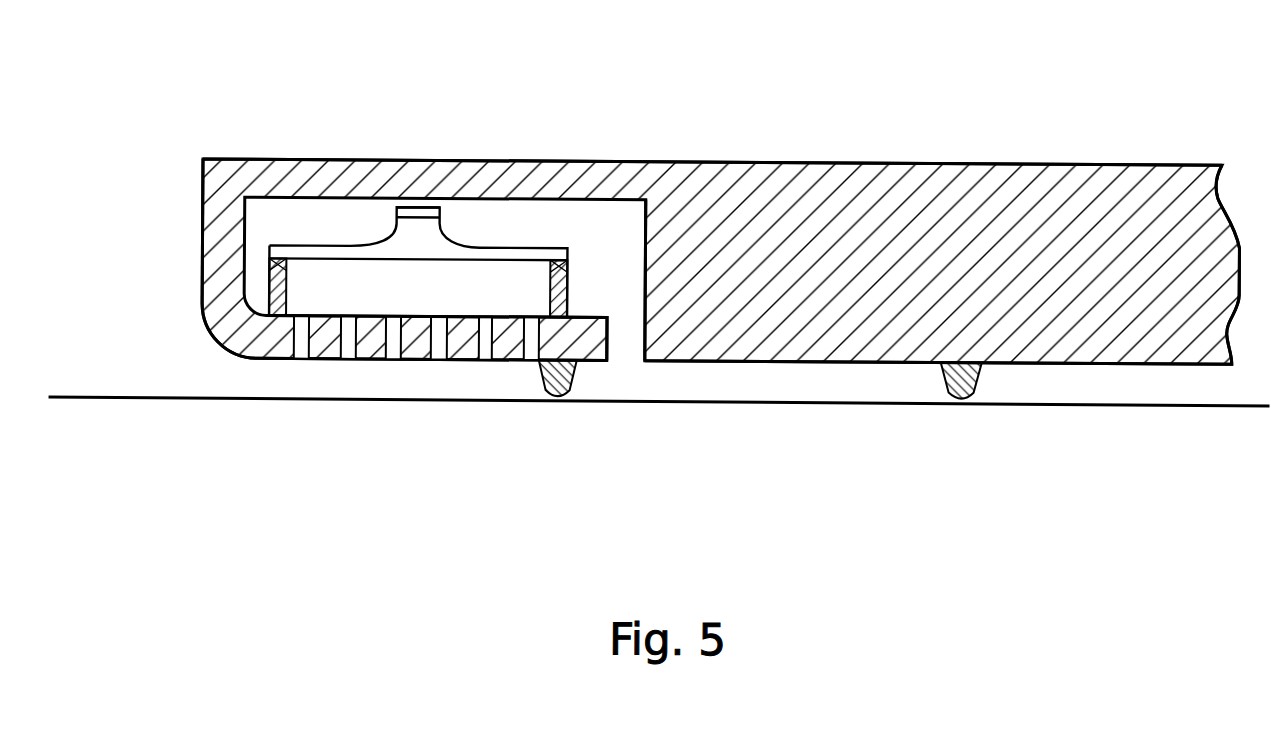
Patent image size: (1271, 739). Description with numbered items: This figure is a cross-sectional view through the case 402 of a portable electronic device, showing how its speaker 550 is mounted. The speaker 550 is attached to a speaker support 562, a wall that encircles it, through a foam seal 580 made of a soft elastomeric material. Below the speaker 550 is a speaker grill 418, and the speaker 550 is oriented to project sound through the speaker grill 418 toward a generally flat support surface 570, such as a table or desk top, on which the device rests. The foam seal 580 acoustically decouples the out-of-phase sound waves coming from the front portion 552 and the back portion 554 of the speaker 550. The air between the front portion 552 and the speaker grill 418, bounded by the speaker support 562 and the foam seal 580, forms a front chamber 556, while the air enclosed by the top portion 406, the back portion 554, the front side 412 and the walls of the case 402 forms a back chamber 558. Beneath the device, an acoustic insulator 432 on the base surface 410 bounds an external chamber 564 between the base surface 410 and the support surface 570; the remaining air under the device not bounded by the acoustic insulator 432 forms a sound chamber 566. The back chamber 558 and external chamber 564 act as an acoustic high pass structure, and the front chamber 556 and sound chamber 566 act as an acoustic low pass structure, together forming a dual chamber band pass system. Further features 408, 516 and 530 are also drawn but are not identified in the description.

The case 402 is at (1115, 157).
The top portion 406 is at (350, 173).
The bottom wall 408 is at (232, 330).
The base surface 410 is at (1165, 327).
The front side 412 is at (203, 285).
The speaker grill 418 is at (390, 319).
The acoustic insulator 432 is at (542, 384).
The cavity wall 516 is at (646, 239).
The gap 530 is at (624, 356).
The speaker 550 is at (360, 243).
The front portion 552 is at (432, 312).
The back portion 554 is at (307, 187).
The front chamber 556 is at (472, 270).
The back chamber 558 is at (460, 216).
The speaker support 562 is at (288, 285).
The external chamber 564 is at (857, 376).
The sound chamber 566 is at (443, 385).
The support surface 570 is at (80, 398).
The foam seal 580 is at (270, 265).